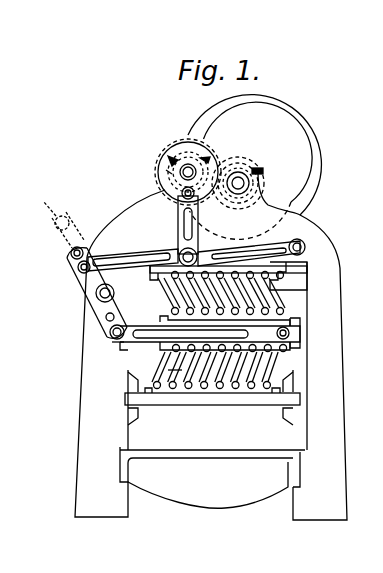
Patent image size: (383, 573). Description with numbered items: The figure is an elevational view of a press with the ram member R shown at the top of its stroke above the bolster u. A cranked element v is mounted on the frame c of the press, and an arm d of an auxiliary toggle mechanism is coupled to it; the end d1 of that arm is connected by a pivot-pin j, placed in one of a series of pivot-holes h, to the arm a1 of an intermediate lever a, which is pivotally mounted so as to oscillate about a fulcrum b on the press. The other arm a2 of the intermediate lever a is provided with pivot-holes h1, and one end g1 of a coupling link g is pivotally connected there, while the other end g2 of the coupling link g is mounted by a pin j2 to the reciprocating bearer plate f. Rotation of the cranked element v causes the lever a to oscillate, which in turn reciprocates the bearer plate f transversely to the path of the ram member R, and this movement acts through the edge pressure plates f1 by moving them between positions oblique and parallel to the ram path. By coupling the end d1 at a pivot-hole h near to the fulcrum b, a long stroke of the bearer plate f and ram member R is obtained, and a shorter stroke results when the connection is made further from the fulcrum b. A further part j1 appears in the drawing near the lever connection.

The cranked element v is at (170, 157).
The arm of auxiliary toggle-mechanism d is at (106, 262).
The end of arm d1 is at (90, 250).
The pivot-holes h is at (66, 222).
The arm of intermediate lever a1 is at (70, 232).
The pivot-holes h1 is at (116, 333).
The pivot-pin j is at (96, 293).
The fulcrum b is at (106, 317).
The intermediate lever a is at (112, 324).
The arm of intermediate lever a2 is at (118, 339).
The stud j1 is at (122, 345).
The end of coupling link g1 is at (124, 349).
The frame c is at (95, 442).
The reciprocating bearer plate f is at (300, 322).
The pin j2 is at (300, 330).
The end of coupling link g2 is at (302, 337).
The coupling link g is at (295, 348).
The edge pressure plates f1 is at (198, 368).
The ram member R is at (283, 402).
The bolster u is at (265, 452).